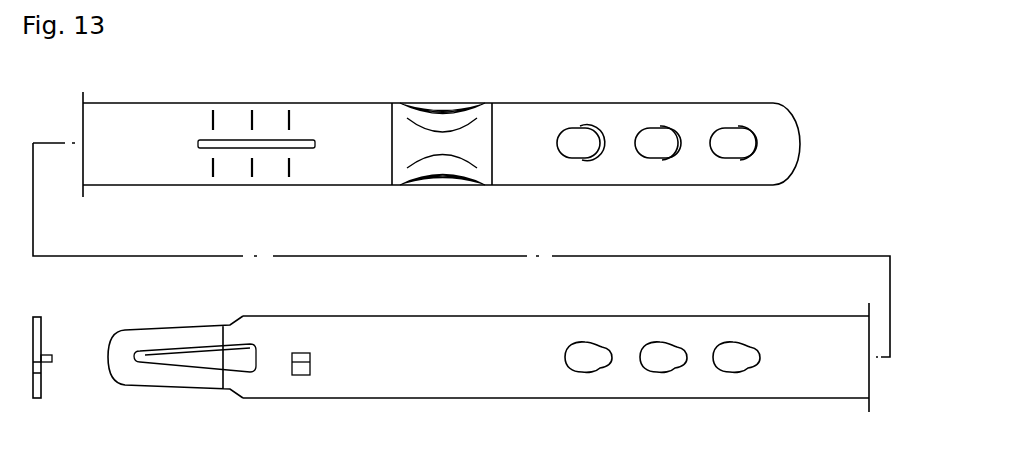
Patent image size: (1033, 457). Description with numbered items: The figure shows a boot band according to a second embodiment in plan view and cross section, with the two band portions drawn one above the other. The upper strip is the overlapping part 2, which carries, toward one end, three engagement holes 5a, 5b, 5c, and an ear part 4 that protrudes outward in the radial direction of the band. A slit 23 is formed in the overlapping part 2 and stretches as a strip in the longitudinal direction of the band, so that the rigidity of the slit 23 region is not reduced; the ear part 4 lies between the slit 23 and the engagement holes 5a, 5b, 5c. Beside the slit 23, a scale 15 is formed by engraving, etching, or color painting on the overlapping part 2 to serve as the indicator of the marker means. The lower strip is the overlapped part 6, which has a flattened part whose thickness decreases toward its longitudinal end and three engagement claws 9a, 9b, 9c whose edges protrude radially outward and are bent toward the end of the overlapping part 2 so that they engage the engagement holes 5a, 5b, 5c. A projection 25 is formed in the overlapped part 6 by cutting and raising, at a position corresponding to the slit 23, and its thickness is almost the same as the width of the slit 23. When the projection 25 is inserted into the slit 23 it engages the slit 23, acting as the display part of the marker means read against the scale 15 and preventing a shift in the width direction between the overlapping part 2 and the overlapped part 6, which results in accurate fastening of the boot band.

The overlapping part 2 is at (368, 128).
The ear part 4 is at (468, 100).
The engagement hole 5a is at (577, 136).
The engagement hole 5b is at (655, 136).
The engagement hole 5c is at (736, 136).
The overlapped part 6 is at (42, 384).
The engagement claw 9a is at (585, 362).
The engagement claw 9b is at (663, 362).
The engagement claw 9c is at (740, 360).
The scale 15 is at (260, 115).
The slit 23 is at (307, 144).
The projection 25 is at (47, 353).